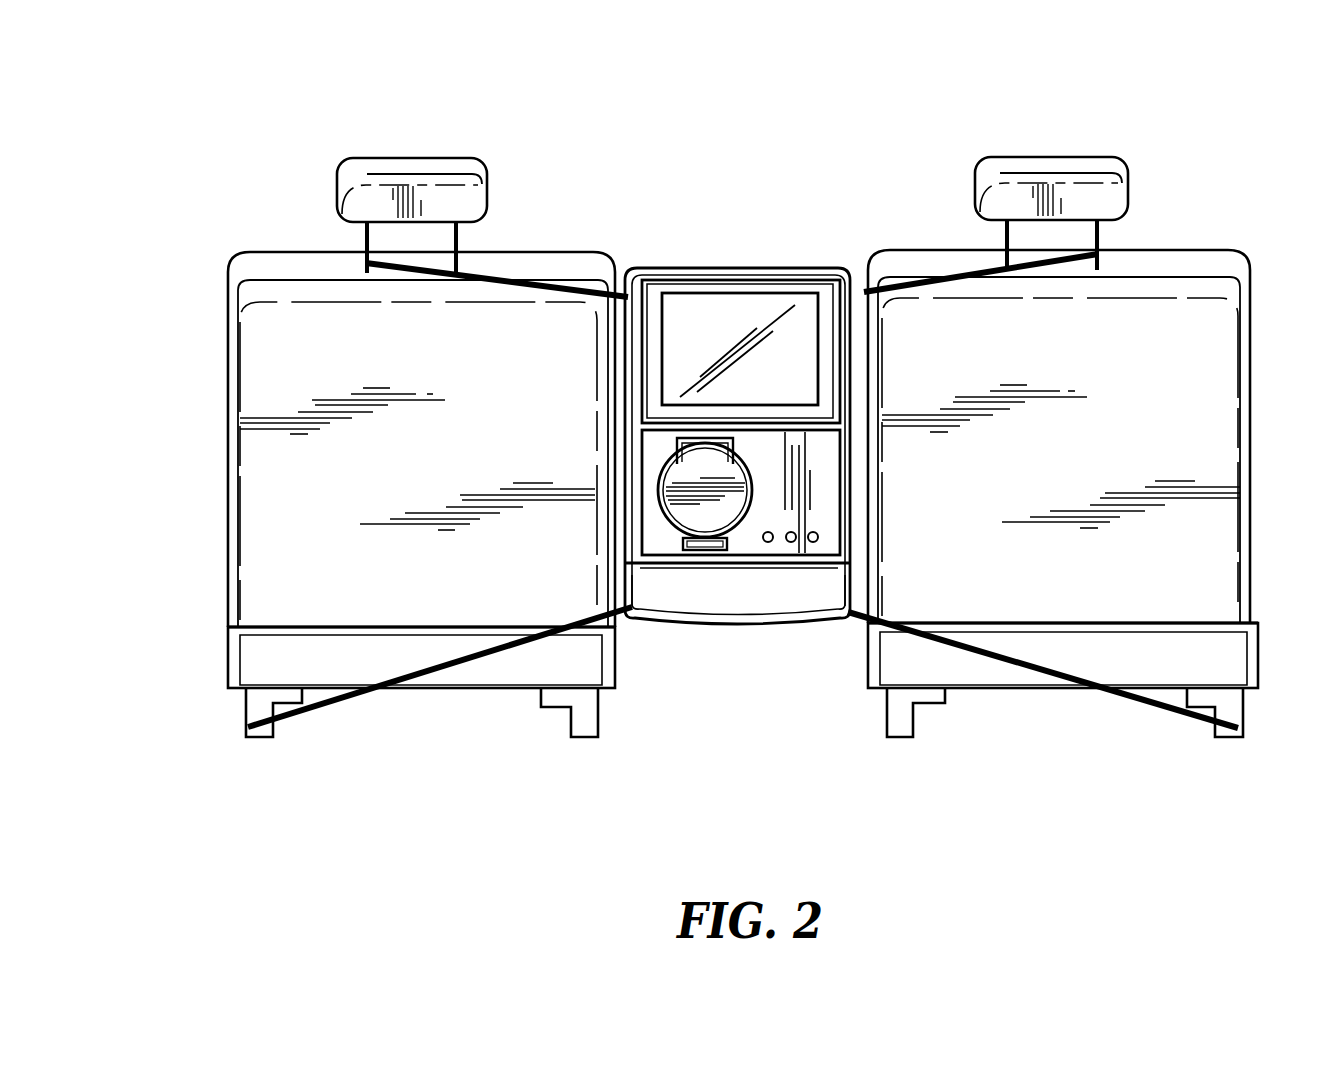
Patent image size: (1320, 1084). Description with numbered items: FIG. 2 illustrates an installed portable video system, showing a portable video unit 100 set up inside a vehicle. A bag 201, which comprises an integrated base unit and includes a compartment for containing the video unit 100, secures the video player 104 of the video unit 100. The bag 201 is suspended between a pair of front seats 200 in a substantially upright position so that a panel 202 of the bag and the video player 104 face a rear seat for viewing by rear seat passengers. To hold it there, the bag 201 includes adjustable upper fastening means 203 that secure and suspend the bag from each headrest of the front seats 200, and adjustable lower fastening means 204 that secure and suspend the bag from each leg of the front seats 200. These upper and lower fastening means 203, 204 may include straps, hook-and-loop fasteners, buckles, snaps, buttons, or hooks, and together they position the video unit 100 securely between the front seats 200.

The portable video unit 100 is at (813, 287).
The video player 104 is at (752, 540).
The front seats 200 is at (343, 147).
The bag 201 is at (632, 272).
The panel 202 is at (665, 605).
The adjustable upper fastening means 203 is at (413, 263).
The adjustable lower fastening means 204 is at (322, 708).